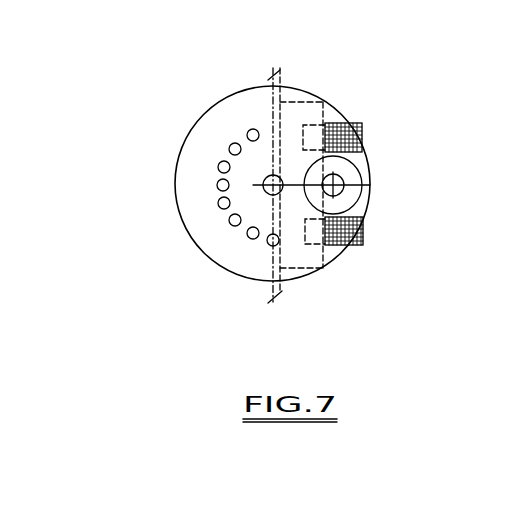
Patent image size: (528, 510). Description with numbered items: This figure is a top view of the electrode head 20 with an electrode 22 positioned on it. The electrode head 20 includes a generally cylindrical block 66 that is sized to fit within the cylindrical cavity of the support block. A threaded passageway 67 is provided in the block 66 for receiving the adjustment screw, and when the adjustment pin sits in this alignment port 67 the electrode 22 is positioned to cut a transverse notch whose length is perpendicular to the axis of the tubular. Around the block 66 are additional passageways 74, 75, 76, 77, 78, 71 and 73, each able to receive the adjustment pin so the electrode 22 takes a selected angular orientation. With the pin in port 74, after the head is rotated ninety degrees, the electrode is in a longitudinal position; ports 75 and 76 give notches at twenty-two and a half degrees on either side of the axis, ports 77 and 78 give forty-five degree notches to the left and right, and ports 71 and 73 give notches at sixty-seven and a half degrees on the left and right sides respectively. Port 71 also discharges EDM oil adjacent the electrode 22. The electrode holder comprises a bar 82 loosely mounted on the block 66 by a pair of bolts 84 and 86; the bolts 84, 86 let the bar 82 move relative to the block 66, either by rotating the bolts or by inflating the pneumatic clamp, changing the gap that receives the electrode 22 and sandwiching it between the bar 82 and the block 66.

The electrode head 20 is at (157, 252).
The electrode 22 is at (282, 73).
The cylindrical block 66 is at (175, 173).
The threaded passageway 67 is at (270, 246).
The port 71 is at (248, 131).
The port 73 is at (249, 238).
The port 74 is at (216, 187).
The port 75 is at (218, 165).
The port 76 is at (217, 205).
The port 77 is at (230, 146).
The port 78 is at (231, 225).
The bar 82 is at (303, 260).
The bolt 84 is at (363, 127).
The bolt 86 is at (362, 245).